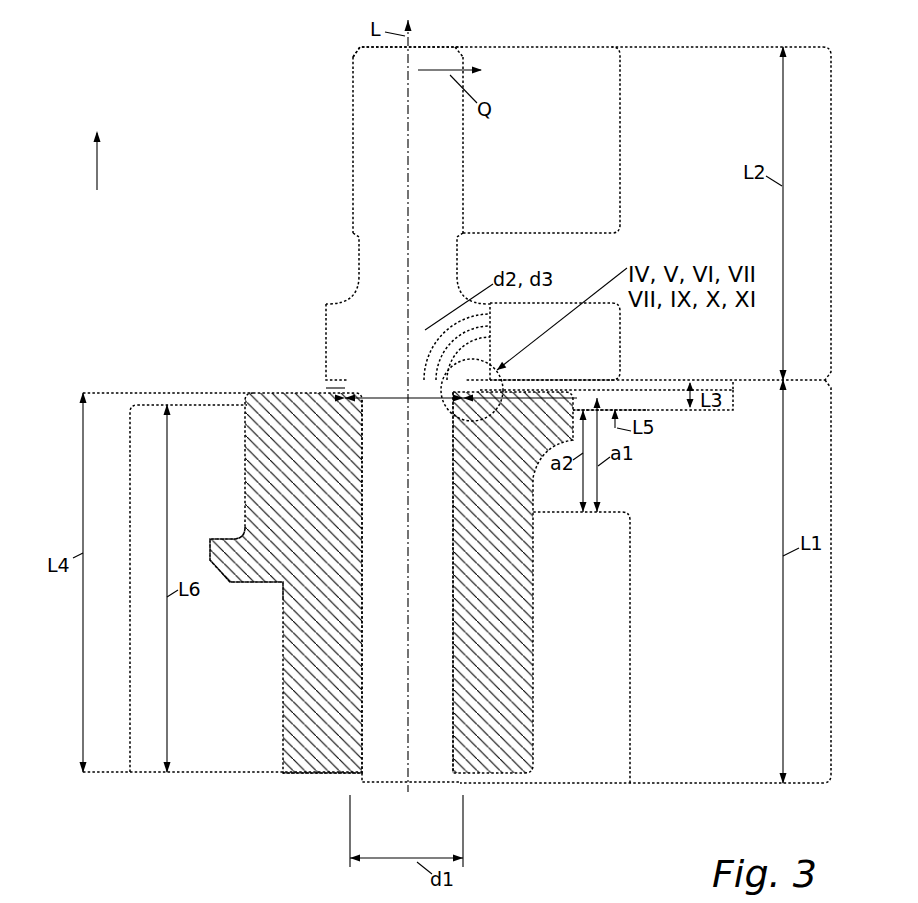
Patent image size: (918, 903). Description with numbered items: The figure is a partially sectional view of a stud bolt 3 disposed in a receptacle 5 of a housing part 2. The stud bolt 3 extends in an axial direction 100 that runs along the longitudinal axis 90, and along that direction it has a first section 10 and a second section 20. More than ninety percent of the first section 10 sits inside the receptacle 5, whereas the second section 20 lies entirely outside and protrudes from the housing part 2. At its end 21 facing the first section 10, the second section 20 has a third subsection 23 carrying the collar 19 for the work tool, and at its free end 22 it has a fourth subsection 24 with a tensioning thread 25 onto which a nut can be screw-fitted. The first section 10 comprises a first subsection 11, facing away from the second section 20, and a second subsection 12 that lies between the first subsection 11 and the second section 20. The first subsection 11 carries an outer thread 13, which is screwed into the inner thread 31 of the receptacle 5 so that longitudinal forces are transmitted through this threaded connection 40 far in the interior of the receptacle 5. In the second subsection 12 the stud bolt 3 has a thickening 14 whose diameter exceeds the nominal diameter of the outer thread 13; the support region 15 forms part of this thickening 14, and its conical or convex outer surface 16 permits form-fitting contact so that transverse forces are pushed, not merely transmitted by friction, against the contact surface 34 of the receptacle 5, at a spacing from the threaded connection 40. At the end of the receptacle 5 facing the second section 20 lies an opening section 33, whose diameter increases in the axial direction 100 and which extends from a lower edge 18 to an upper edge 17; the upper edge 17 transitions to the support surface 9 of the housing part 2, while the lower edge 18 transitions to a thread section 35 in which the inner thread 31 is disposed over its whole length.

The housing part 2 is at (245, 438).
The stud bolt 3 is at (353, 172).
The receptacle 5 is at (352, 460).
The support surface 9 is at (300, 393).
The first section 10 is at (831, 580).
The first subsection 11 is at (630, 645).
The second subsection 12 is at (733, 388).
The outer thread 13 is at (362, 725).
The thickening 14 is at (508, 340).
The support region 15 is at (513, 369).
The outer surface 16 is at (290, 388).
The upper edge 17 is at (478, 350).
The lower edge 18 is at (478, 325).
The collar 19 is at (325, 345).
The second section 20 is at (831, 210).
The end 21 is at (353, 368).
The free end 22 is at (377, 60).
The third subsection 23 is at (620, 335).
The fourth subsection 24 is at (620, 133).
The tensioning thread 25 is at (352, 93).
The inner thread 31 is at (362, 734).
The opening section 33 is at (648, 397).
The contact surface 34 is at (346, 385).
The thread section 35 is at (130, 585).
The threaded connection 40 is at (345, 548).
The longitudinal axis 90 is at (410, 784).
The axial direction 100 is at (103, 173).